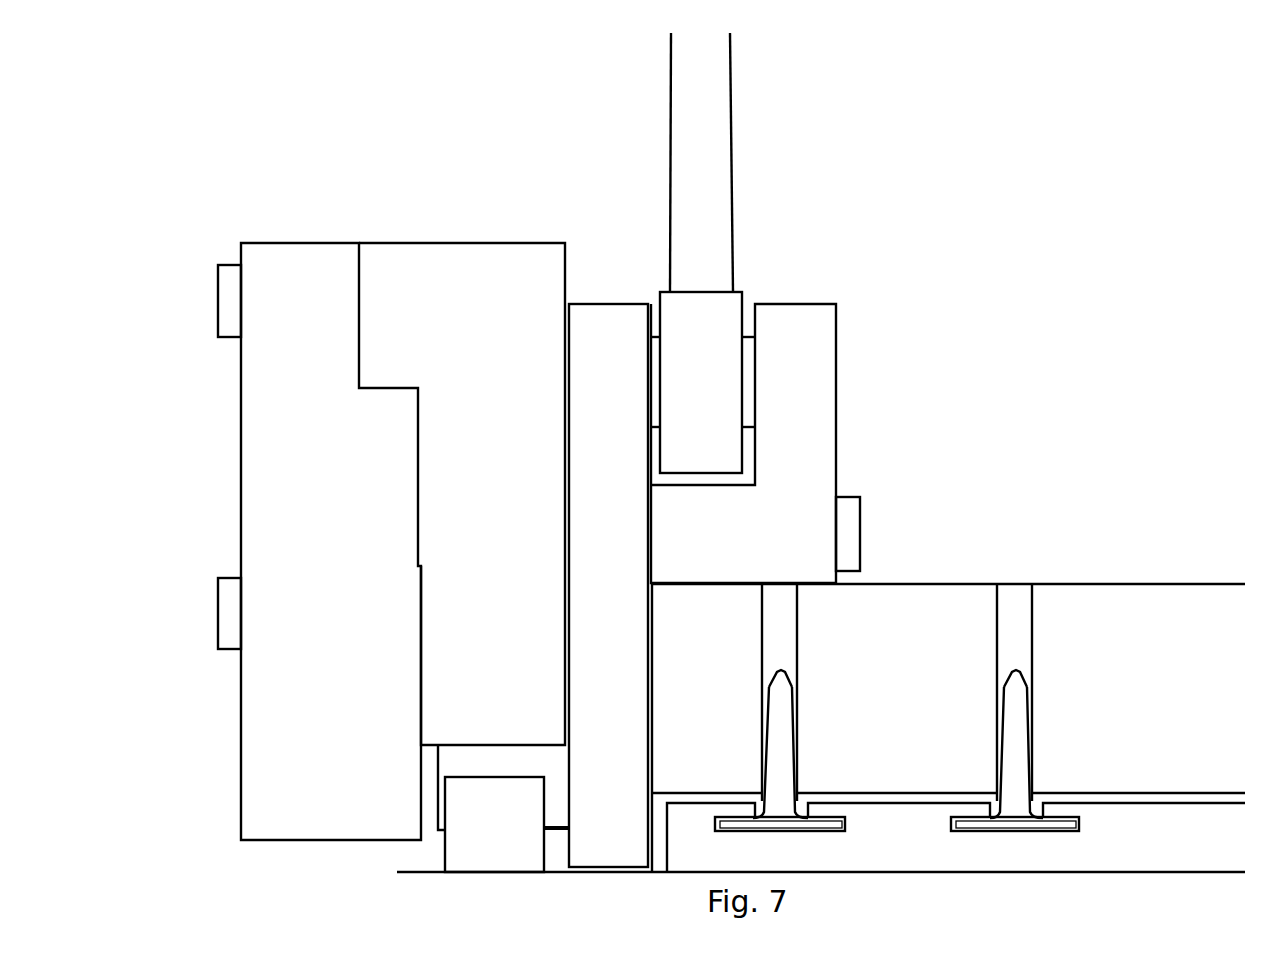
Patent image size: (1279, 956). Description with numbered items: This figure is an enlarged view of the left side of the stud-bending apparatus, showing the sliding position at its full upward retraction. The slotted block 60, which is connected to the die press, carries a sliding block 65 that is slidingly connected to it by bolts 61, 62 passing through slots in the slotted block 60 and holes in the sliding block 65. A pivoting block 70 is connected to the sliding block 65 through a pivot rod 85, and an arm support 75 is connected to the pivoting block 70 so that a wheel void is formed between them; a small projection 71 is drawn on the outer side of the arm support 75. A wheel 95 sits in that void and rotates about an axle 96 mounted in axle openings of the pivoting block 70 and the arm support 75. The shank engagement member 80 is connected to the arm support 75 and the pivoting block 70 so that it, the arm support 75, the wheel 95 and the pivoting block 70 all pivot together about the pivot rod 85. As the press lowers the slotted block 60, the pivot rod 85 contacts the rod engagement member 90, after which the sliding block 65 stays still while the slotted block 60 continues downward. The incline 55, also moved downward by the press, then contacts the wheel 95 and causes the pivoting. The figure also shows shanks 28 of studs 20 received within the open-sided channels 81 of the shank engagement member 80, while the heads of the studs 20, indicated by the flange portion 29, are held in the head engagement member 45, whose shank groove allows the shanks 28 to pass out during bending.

The stud 20 is at (897, 768).
The shank 28 is at (783, 730).
The rail flange 29 is at (808, 829).
The head engagement member 45 is at (956, 837).
The incline 55 is at (701, 162).
The slotted block 60 is at (331, 541).
The bolt 61 is at (231, 304).
The bolt 62 is at (231, 615).
The sliding block 65 is at (462, 494).
The pivoting block 70 is at (608, 585).
The side tab 71 is at (850, 527).
The arm support 75 is at (743, 443).
The shank engagement member 80 is at (948, 728).
The channel 81 is at (785, 641).
The pivot rod 85 is at (479, 787).
The rod engagement member 90 is at (507, 824).
The wheel 95 is at (701, 382).
The axle 96 is at (747, 377).